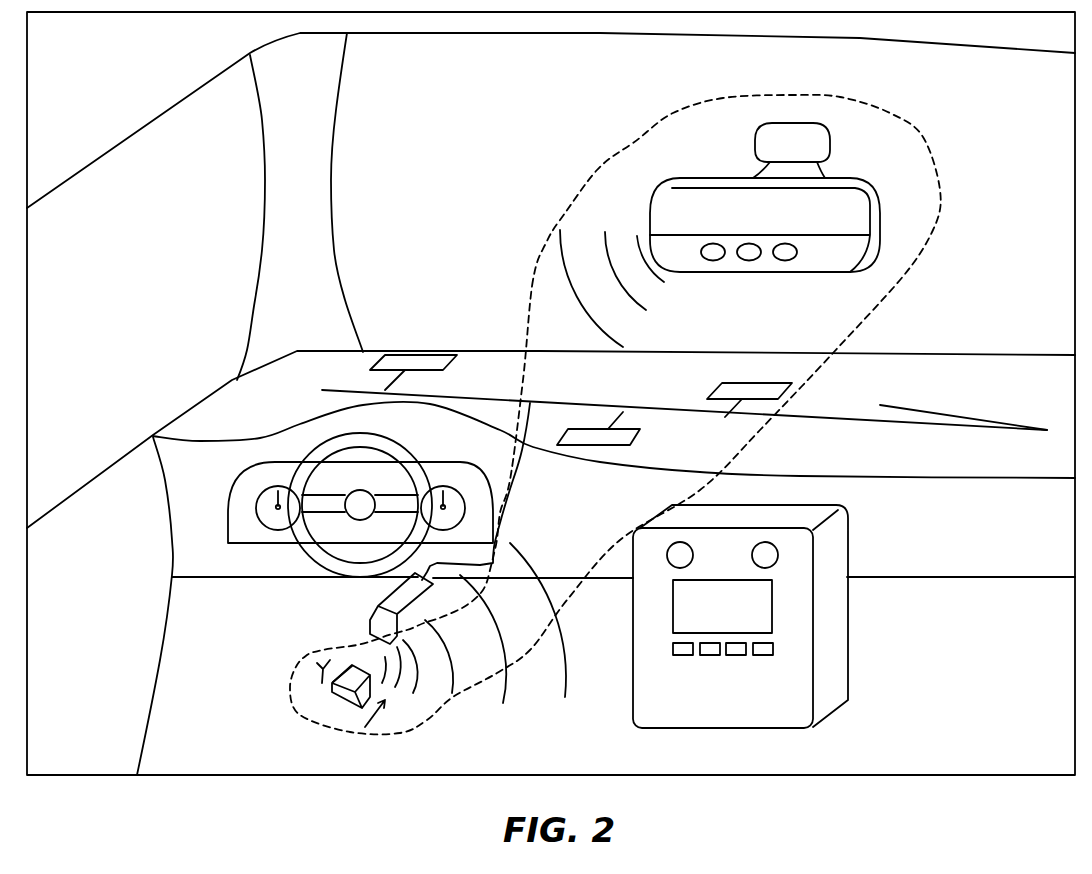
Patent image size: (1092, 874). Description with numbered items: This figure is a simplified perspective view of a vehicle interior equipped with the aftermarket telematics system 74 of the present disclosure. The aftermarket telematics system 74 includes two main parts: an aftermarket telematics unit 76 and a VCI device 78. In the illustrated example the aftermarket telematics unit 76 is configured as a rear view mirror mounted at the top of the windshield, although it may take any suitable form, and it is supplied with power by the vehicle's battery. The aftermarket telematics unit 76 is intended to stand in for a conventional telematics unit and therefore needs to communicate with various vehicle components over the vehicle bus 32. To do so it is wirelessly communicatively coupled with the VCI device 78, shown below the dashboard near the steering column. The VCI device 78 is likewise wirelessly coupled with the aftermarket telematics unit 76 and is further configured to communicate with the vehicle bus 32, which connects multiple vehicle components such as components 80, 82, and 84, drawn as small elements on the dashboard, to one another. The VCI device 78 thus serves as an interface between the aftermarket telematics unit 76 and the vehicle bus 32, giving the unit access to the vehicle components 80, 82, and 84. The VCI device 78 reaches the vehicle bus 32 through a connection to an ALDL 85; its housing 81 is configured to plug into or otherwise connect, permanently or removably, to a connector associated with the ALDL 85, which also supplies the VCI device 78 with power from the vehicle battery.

The vehicle bus 32 is at (1000, 424).
The aftermarket telematics system 74 is at (441, 726).
The aftermarket telematics unit 76 is at (852, 180).
The VCI device 78 is at (335, 711).
The vehicle component 80 is at (418, 352).
The housing 81 is at (347, 677).
The vehicle component 82 is at (632, 437).
The vehicle component 84 is at (745, 383).
The ALDL 85 is at (367, 620).